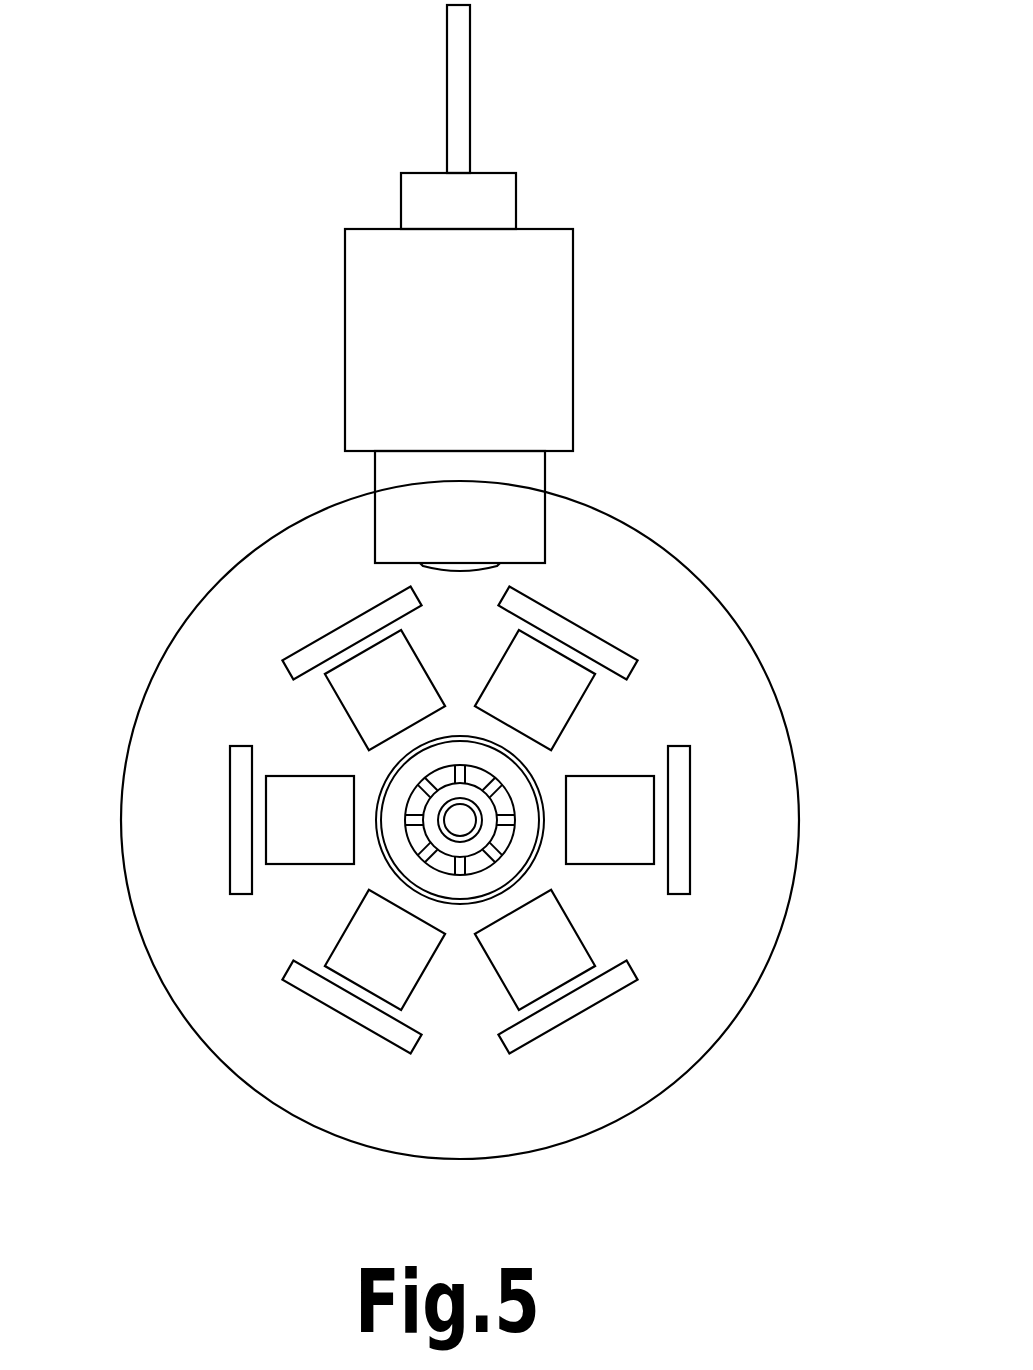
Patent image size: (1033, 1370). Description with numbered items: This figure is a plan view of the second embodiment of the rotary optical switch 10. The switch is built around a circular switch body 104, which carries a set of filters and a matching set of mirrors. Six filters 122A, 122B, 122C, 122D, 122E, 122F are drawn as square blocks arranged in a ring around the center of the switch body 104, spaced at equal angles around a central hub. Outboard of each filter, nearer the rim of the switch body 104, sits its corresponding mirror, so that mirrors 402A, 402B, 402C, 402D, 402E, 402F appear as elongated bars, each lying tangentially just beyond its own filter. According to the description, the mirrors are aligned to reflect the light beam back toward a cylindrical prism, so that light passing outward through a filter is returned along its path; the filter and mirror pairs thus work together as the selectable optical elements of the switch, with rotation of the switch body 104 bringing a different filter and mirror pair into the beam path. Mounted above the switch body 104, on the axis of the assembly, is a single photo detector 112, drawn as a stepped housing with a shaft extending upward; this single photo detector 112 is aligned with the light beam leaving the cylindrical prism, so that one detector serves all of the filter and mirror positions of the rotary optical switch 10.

The rotary optical switch 10 is at (162, 179).
The photo detector 112 is at (573, 280).
The switch body 104 is at (215, 590).
The filter 122A is at (610, 820).
The filter 122B is at (535, 690).
The filter 122C is at (385, 690).
The filter 122D is at (310, 820).
The filter 122E is at (385, 950).
The filter 122F is at (535, 950).
The mirror 402A is at (690, 820).
The mirror 402B is at (578, 621).
The mirror 402C is at (347, 623).
The mirror 402D is at (231, 820).
The mirror 402E is at (350, 1013).
The mirror 402F is at (575, 1015).